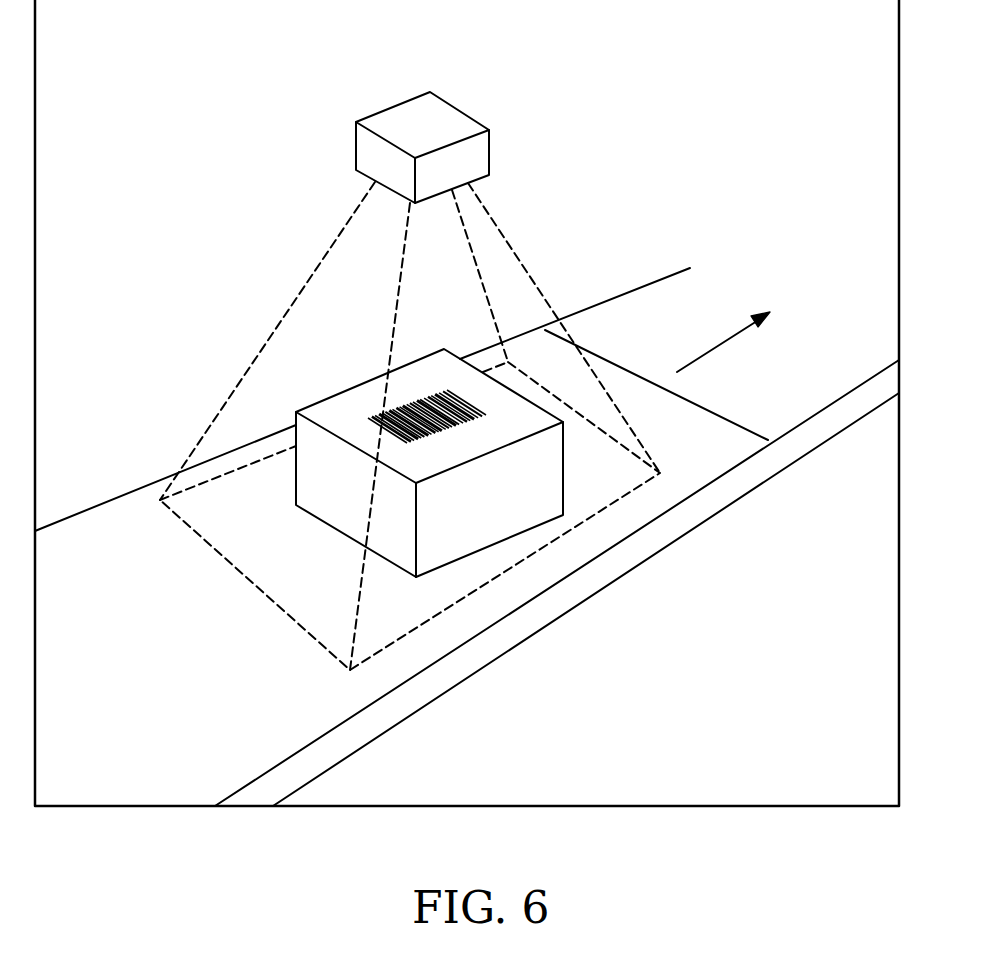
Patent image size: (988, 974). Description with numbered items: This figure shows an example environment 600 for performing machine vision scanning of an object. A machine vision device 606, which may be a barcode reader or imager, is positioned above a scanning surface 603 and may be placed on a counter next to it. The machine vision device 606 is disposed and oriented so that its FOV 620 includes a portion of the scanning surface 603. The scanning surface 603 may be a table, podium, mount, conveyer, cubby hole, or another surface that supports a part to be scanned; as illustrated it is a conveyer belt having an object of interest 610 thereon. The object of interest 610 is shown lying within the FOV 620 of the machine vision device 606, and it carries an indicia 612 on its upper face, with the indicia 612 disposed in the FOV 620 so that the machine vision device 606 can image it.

The environment 600 is at (227, 92).
The scanning surface 603 is at (740, 443).
The machine vision device 606 is at (462, 112).
The object of interest 610 is at (490, 547).
The indicia 612 is at (457, 430).
The FOV 620 is at (545, 297).